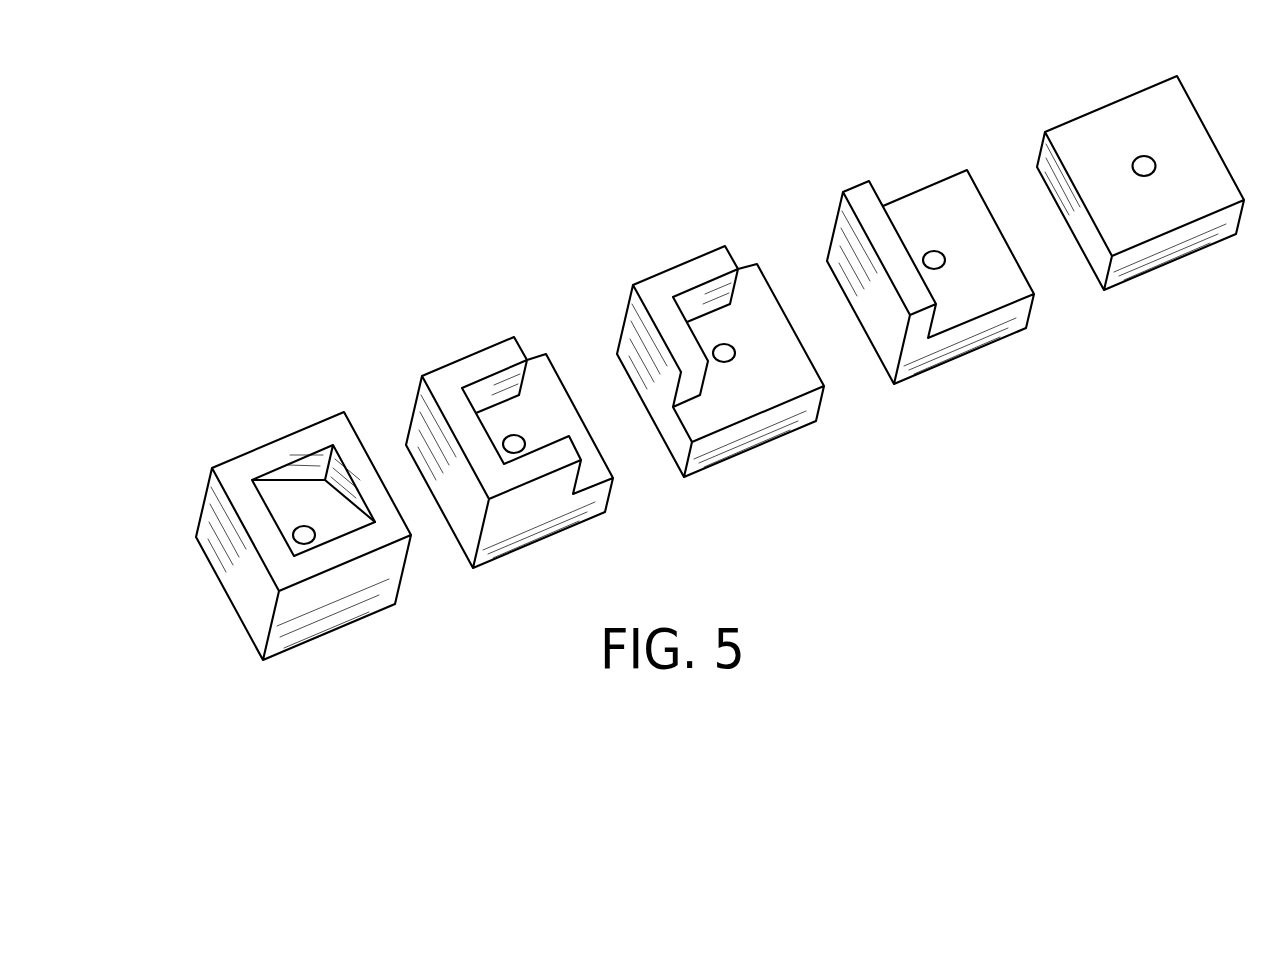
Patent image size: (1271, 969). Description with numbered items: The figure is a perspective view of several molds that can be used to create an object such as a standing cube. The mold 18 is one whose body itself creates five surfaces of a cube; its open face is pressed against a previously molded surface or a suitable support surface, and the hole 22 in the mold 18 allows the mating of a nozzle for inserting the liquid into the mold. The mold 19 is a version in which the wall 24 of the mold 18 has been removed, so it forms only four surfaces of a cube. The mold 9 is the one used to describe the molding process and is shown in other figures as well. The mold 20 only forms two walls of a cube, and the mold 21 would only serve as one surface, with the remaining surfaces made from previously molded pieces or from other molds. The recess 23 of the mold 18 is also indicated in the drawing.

The mold 9 is at (695, 250).
The mold 18 is at (284, 430).
The mold 19 is at (492, 340).
The mold 20 is at (943, 173).
The mold 21 is at (1138, 87).
The hole 22 is at (300, 535).
The recess 23 is at (300, 472).
The wall 24 is at (357, 513).